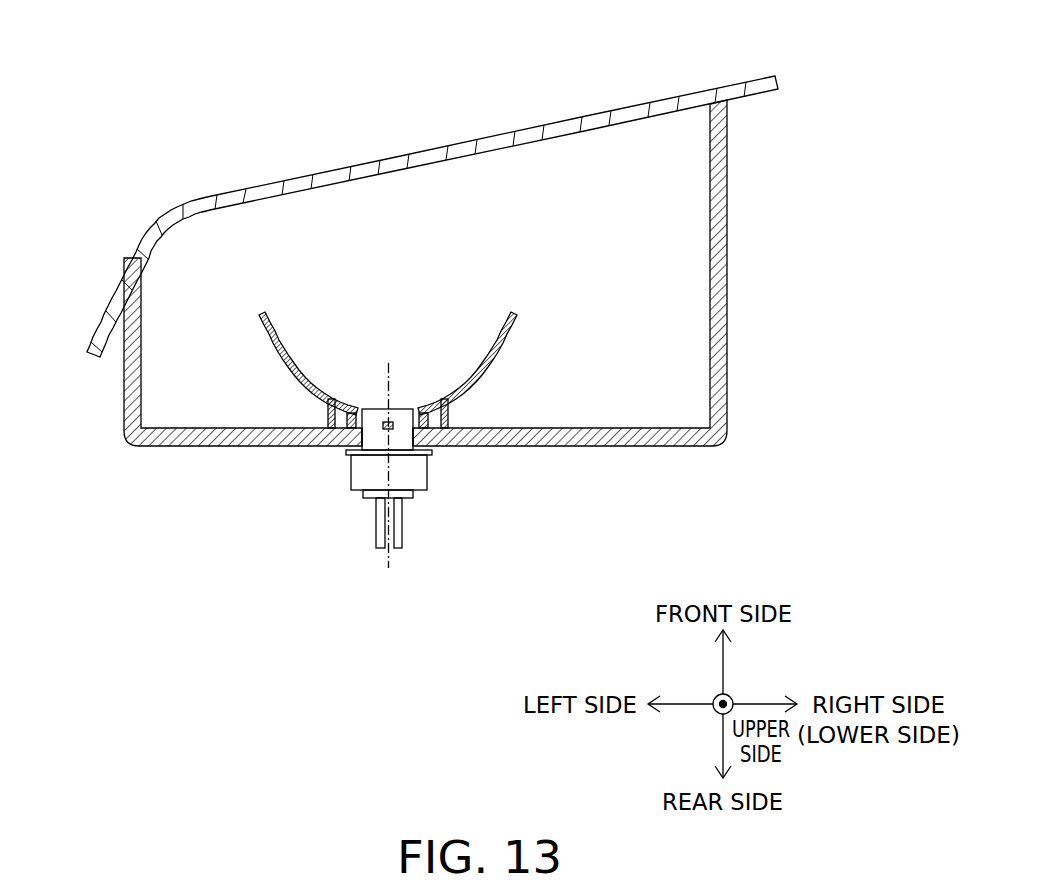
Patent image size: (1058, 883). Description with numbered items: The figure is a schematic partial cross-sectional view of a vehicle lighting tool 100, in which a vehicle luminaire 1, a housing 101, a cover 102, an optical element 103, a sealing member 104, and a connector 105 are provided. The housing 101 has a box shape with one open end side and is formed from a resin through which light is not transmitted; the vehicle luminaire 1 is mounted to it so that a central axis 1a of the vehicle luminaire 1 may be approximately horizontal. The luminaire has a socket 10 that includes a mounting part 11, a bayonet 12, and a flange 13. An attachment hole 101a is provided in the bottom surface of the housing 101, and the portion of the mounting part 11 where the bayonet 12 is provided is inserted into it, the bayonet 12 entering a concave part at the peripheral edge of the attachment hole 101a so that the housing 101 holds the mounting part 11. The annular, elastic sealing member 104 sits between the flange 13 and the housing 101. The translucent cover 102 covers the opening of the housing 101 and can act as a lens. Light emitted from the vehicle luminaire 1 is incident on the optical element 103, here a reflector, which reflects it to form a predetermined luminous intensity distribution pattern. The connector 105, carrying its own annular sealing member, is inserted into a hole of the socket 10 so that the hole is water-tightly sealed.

The vehicle lighting tool 100 is at (471, 311).
The housing 101 is at (474, 354).
The attachment hole 101a is at (405, 430).
The cover 102 is at (290, 187).
The optical element 103 is at (287, 357).
The sealing member 104 is at (347, 449).
The connector 105 is at (410, 497).
The vehicle luminaire 1 is at (434, 435).
The central axis 1a is at (330, 512).
The socket 10 is at (433, 465).
The mounting part 11 is at (395, 408).
The bayonet 12 is at (372, 412).
The flange 13 is at (355, 470).